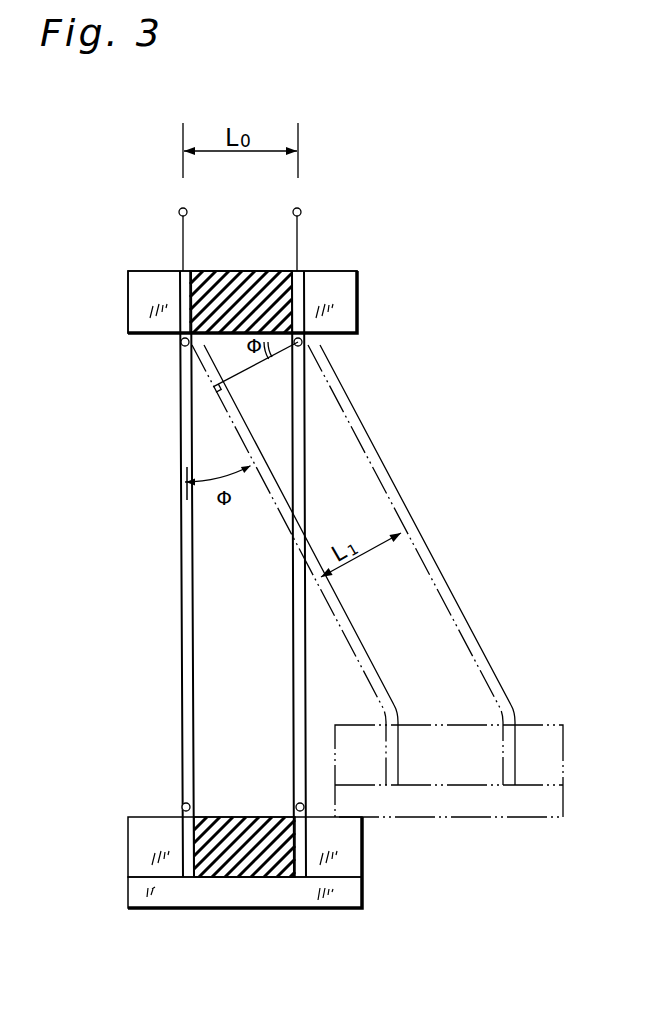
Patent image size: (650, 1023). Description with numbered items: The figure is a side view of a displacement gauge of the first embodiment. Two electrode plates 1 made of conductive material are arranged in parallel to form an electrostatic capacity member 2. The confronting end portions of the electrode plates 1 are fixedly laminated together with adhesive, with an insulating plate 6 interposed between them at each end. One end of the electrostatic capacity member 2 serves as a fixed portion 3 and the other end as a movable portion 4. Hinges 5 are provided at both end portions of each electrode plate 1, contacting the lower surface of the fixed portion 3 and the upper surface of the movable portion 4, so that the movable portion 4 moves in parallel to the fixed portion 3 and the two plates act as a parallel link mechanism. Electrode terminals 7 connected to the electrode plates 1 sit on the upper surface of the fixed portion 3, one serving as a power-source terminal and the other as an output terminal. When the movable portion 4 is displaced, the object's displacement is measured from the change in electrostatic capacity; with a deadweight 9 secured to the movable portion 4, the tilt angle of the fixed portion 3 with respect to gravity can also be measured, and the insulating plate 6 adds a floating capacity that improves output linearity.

The electrode plate 1 is at (181, 672).
The electrostatic capacity member 2 is at (367, 301).
The fixed portion 3 is at (134, 299).
The movable portion 4 is at (132, 851).
The hinge 5 is at (180, 345).
The insulating plate 6 is at (238, 272).
The electrode terminal 7 is at (180, 210).
The deadweight 9 is at (288, 895).